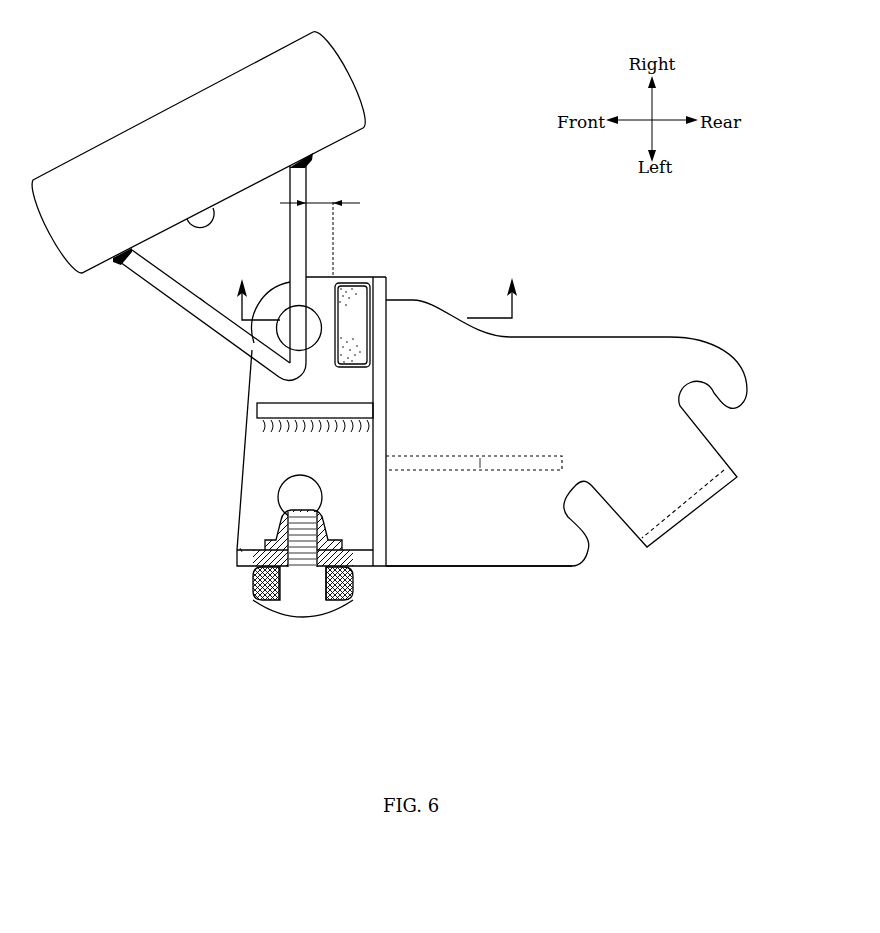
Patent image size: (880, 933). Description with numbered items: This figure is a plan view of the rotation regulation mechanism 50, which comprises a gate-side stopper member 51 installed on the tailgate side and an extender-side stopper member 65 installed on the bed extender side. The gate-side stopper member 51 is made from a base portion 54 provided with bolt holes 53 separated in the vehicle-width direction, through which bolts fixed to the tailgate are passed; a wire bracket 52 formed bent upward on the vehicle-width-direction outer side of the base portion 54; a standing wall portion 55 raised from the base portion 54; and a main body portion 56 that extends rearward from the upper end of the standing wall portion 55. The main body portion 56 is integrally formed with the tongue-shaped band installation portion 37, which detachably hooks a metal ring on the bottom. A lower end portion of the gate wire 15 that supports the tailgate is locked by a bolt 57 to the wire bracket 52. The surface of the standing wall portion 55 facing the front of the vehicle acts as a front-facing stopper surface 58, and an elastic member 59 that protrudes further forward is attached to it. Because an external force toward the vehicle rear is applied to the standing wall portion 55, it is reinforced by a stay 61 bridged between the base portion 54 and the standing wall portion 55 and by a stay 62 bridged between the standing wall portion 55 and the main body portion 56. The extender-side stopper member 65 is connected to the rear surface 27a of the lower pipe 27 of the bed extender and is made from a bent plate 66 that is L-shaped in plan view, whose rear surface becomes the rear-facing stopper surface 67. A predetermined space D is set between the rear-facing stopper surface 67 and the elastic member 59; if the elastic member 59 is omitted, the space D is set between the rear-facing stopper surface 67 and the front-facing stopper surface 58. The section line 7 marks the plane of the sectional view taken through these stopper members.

The lower pipe 27 is at (313, 68).
The rear surface of the lower pipe 27a is at (188, 220).
The rear-facing stopper surface 67 is at (307, 238).
The extender-side stopper member 65 is at (193, 333).
The bent plate 66 is at (182, 295).
The predetermined space D is at (319, 203).
The section line VII-VII 7 is at (377, 292).
The bolt holes 53 is at (283, 343).
The base portion 54 is at (268, 463).
The standing wall portion 55 is at (386, 560).
The elastic member 59 is at (352, 280).
The stay 61 is at (258, 407).
The front-facing stopper surface 58 is at (372, 465).
The stay 62 is at (480, 473).
The main body portion 56 is at (583, 360).
The gate-side stopper member 51 is at (583, 567).
The band installation portion 37 is at (680, 493).
The wire bracket 52 is at (235, 557).
The bolt 57 is at (305, 592).
The gate wire 15 is at (255, 587).
The rotation regulation mechanism 50 is at (158, 546).